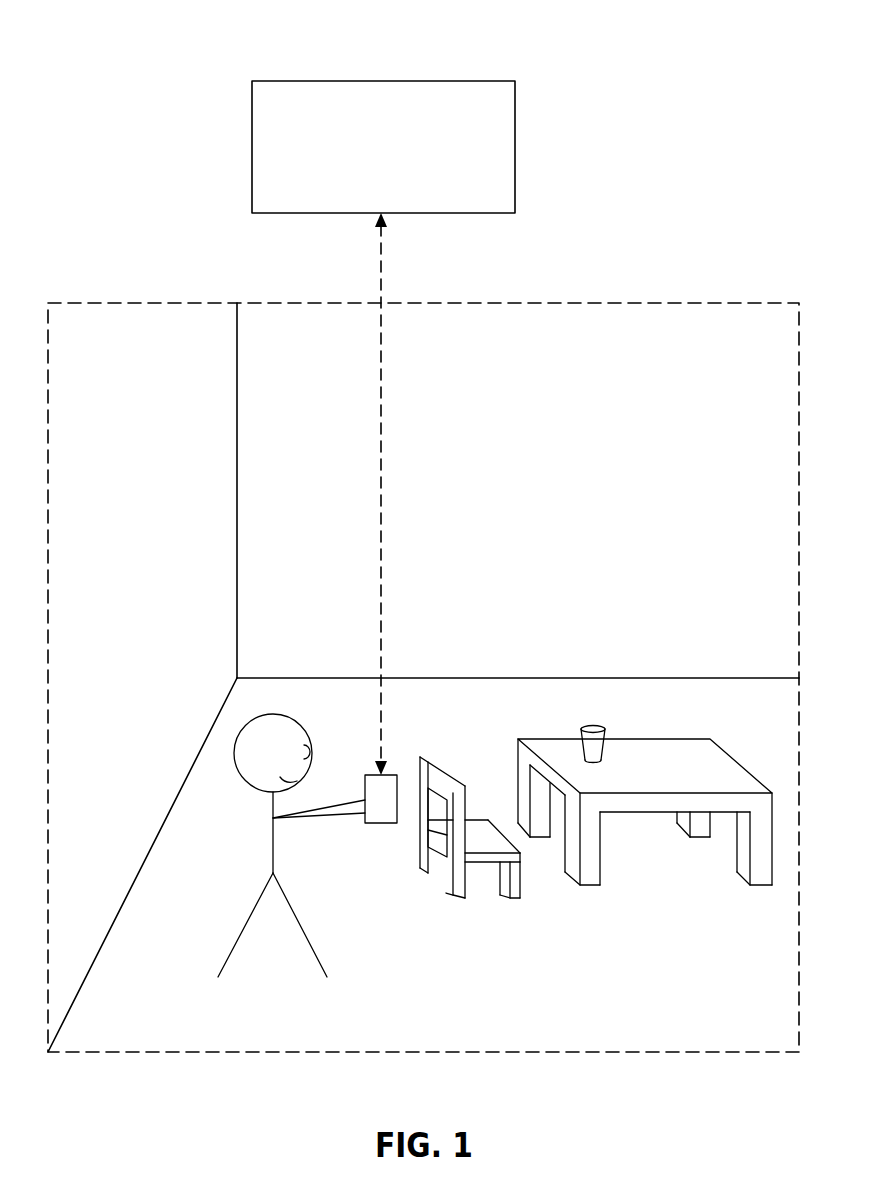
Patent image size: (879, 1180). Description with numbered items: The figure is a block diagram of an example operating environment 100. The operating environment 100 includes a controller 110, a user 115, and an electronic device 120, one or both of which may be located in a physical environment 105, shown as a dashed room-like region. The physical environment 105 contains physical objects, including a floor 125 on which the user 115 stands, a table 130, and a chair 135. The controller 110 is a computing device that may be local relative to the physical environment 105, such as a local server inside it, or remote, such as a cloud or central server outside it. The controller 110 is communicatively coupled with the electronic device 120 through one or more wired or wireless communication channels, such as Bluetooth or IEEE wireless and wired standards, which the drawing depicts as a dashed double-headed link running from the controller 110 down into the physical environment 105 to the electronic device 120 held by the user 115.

The operating environment 100 is at (110, 36).
The physical environment 105 is at (212, 364).
The controller 110 is at (456, 159).
The user 115 is at (271, 843).
The electronic device 120 is at (370, 825).
The floor 125 is at (630, 989).
The table 130 is at (690, 837).
The chair 135 is at (449, 898).